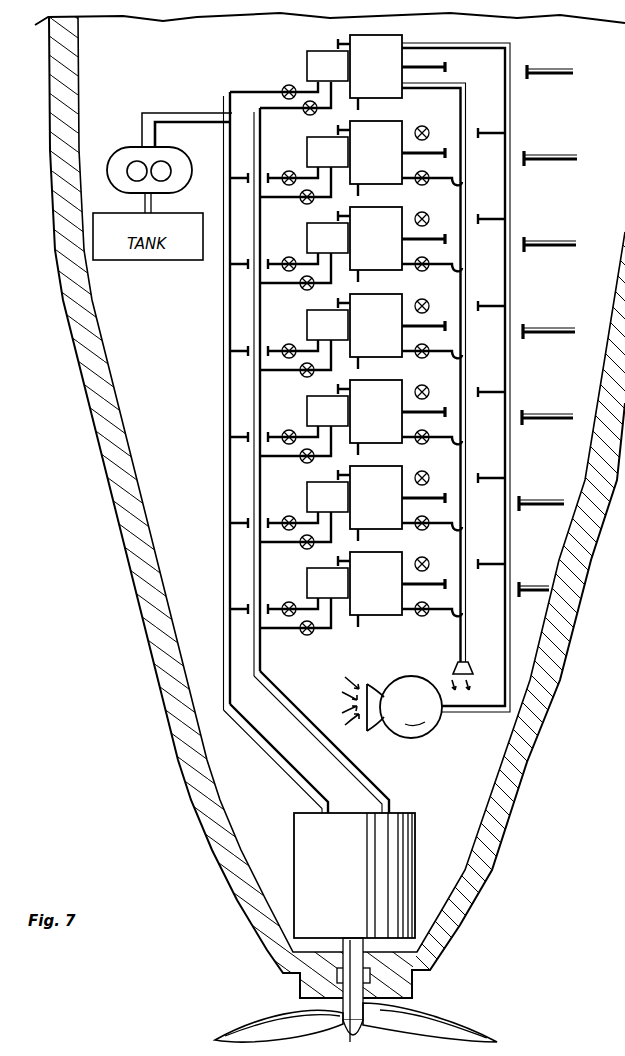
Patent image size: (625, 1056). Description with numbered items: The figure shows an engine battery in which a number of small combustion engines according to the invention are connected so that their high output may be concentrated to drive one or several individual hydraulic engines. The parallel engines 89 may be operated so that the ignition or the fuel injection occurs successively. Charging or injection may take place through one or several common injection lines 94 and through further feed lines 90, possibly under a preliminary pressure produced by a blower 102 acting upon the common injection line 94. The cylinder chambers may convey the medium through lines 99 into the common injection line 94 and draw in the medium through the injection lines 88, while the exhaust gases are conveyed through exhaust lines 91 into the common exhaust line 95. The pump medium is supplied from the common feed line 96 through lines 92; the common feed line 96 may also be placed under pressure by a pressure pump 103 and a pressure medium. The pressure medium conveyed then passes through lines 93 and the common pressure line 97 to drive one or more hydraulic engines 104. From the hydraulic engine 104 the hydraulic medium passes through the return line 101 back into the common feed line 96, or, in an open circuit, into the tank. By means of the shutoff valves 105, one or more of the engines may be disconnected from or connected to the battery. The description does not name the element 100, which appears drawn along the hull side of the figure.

The injection line 88 is at (344, 44).
The parallel engine 89 is at (388, 85).
The feed line 90 is at (472, 43).
The exhaust line 91 is at (464, 185).
The line 92 is at (270, 90).
The line 93 is at (300, 110).
The common injection line 94 is at (503, 615).
The common exhaust line 95 is at (465, 661).
The common feed line 96 is at (212, 122).
The common pressure line 97 is at (298, 712).
The line 99 is at (358, 102).
The hull fins 100 is at (538, 75).
The return line 101 is at (282, 772).
The blower 102 is at (418, 732).
The pressure pump 103 is at (185, 172).
The hydraulic engine 104 is at (310, 888).
The shutoff valve 105 is at (290, 85).